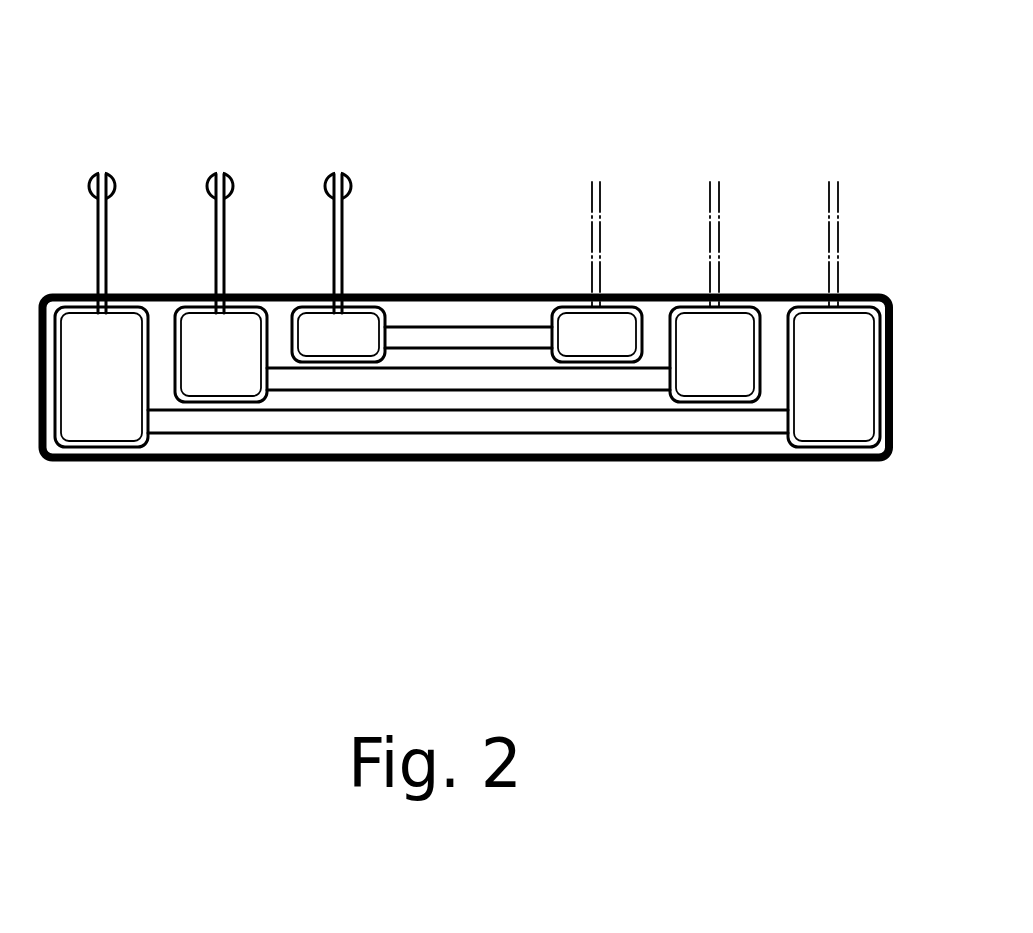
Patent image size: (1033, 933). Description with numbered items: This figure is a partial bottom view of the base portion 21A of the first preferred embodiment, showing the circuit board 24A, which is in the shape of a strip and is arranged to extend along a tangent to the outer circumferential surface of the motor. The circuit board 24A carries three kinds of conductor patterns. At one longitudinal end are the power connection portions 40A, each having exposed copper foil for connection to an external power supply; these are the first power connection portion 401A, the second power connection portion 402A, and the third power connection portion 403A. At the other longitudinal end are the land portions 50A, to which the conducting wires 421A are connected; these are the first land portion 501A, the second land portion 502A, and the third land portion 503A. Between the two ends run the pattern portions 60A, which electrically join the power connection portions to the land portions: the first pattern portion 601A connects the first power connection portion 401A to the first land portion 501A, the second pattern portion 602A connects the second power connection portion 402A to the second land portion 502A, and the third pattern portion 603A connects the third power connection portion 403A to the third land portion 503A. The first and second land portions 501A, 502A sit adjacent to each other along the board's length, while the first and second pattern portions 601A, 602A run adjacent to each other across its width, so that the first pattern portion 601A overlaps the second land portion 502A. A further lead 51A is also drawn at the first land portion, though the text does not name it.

The base portion 21A is at (650, 130).
The circuit board 24A is at (482, 443).
The power connection portions 40A is at (867, 555).
The first power connection portion 401A is at (845, 405).
The second power connection portion 402A is at (707, 367).
The third power connection portion 403A is at (592, 342).
The land portions 50A is at (368, 555).
The first land portion 501A is at (102, 377).
The second land portion 502A is at (217, 353).
The third land portion 503A is at (350, 332).
The pattern portions 60A is at (605, 97).
The first pattern portion 601A is at (422, 423).
The second pattern portion 602A is at (492, 380).
The third pattern portion 603A is at (525, 337).
The lead terminal 51A is at (100, 172).
The conducting wires 421A is at (210, 227).